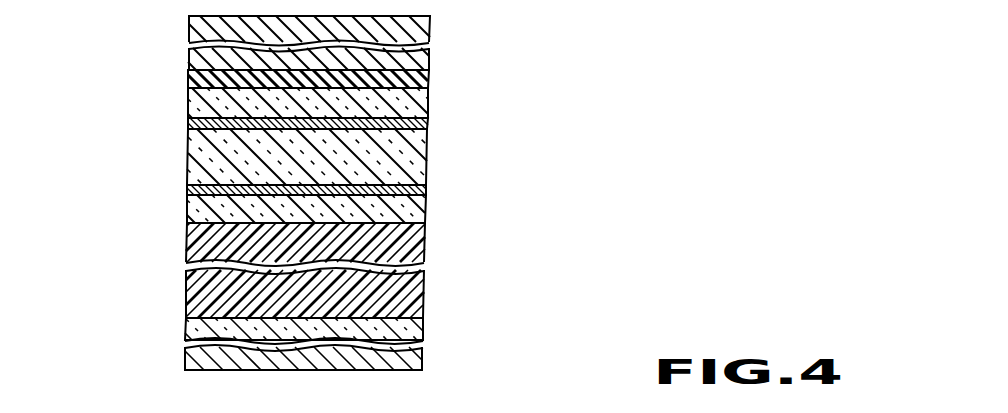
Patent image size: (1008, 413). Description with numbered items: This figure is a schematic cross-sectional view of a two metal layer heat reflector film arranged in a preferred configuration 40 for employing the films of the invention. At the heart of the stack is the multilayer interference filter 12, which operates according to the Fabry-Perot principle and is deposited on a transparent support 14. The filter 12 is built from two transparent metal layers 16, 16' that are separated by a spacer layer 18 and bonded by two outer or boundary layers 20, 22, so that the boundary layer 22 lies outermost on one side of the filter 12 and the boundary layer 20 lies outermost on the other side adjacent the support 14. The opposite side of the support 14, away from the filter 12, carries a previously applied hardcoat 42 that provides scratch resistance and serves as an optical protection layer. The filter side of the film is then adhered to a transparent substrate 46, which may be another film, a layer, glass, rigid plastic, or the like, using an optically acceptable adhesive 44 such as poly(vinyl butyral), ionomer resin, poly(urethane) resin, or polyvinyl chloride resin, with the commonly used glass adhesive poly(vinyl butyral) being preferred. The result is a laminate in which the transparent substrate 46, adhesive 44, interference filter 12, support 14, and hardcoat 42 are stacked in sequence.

The preferred configuration 40 is at (172, 232).
The transparent substrate 46 is at (431, 40).
The adhesive 44 is at (430, 84).
The multilayer interference filter 12 is at (180, 217).
The boundary layer 22 is at (429, 106).
The transparent metal layer 16 is at (547, 130).
The spacer layer 18 is at (428, 160).
The transparent metal layer 16' is at (546, 190).
The boundary layer 20 is at (426, 218).
The transparent support 14 is at (427, 268).
The hardcoat 42 is at (430, 335).